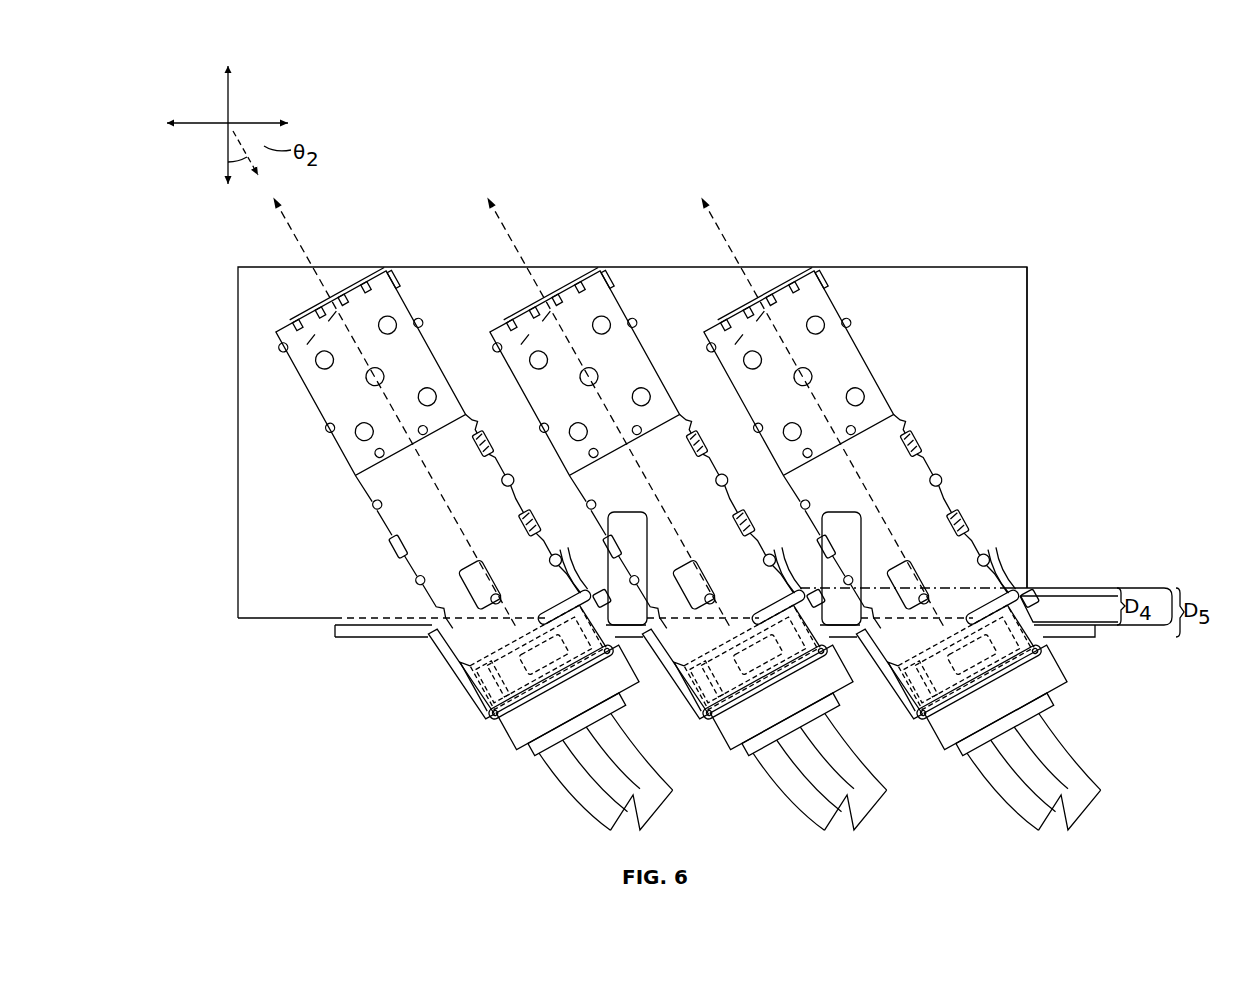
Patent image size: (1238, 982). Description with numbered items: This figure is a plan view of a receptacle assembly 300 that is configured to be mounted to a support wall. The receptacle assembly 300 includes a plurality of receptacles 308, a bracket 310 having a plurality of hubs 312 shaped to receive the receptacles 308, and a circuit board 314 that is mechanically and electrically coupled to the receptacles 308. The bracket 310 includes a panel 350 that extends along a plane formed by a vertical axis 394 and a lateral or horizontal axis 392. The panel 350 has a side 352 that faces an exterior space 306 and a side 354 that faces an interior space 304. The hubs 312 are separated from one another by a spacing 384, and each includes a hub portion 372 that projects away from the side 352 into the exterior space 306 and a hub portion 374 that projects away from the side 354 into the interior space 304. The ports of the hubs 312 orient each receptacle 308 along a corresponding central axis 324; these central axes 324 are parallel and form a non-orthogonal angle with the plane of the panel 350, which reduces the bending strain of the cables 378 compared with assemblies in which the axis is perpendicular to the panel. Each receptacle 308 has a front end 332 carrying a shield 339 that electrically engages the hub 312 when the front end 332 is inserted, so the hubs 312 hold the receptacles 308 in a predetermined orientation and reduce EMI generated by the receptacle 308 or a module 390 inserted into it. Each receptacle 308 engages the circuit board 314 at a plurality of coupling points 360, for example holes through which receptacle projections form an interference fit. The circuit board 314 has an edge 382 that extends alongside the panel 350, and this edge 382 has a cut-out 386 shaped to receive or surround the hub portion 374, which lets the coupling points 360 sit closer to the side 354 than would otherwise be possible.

The receptacle assembly 300 is at (957, 196).
The interior space 304 is at (150, 596).
The exterior space 306 is at (150, 688).
The receptacle 308 is at (638, 439).
The bracket 310 is at (1072, 585).
The hub 312 is at (452, 681).
The circuit board 314 is at (1029, 308).
The central axis 324 is at (607, 410).
The front end 332 is at (502, 722).
The shield 339 is at (765, 681).
The panel 350 is at (340, 640).
The side 352 is at (365, 640).
The side 354 is at (360, 615).
The coupling point 360 is at (647, 464).
The hub portion 372 is at (452, 659).
The hub portion 374 is at (578, 580).
The cable 378 is at (823, 779).
The edge 382 is at (277, 621).
The spacing 384 is at (632, 506).
The cut-out 386 is at (606, 600).
The module 390 is at (722, 807).
The horizontal axis 392 is at (256, 123).
The vertical axis 394 is at (228, 92).